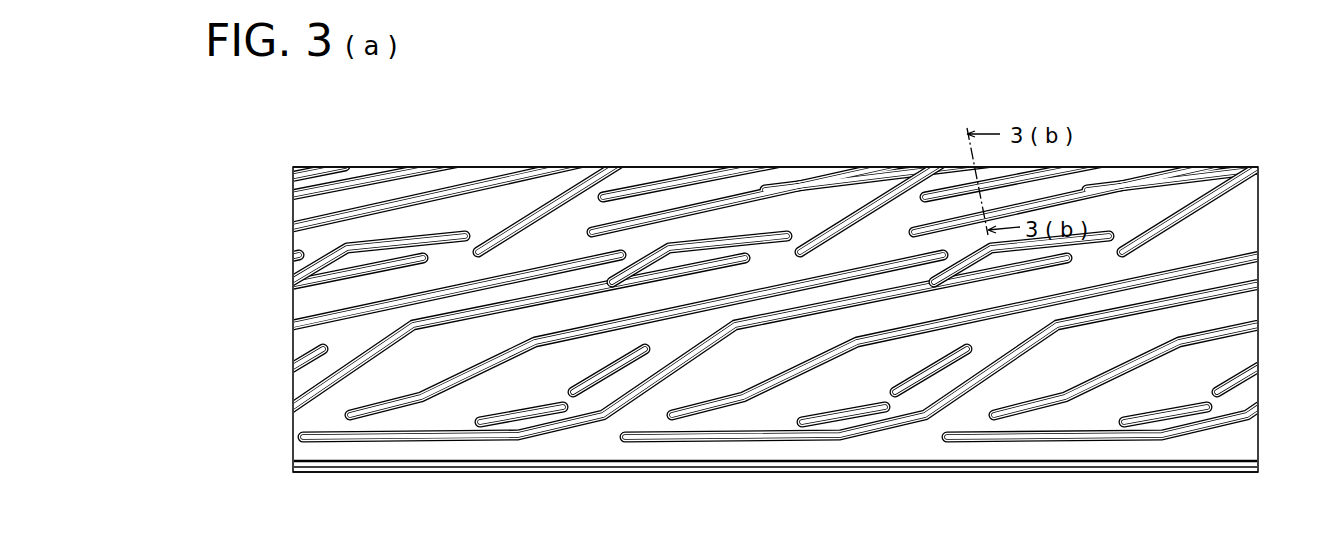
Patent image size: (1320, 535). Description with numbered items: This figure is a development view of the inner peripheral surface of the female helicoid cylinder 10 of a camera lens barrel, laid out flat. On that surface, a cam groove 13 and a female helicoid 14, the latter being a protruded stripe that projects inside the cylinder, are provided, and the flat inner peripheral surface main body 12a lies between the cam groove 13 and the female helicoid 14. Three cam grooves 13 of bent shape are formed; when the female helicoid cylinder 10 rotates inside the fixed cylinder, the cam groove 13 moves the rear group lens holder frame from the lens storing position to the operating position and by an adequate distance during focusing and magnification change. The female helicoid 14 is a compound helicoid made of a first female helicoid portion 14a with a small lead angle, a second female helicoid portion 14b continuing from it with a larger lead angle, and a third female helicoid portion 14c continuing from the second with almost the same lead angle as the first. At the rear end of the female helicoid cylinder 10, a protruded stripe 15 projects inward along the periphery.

The female helicoid cylinder 10 is at (685, 95).
The inner peripheral surface main body 12a is at (806, 172).
The cam groove 13 is at (358, 170).
The female helicoid 14 is at (426, 170).
The first female helicoid portion 14a is at (655, 318).
The second female helicoid portion 14b is at (590, 382).
The third female helicoid portion 14c is at (465, 408).
The protruded stripe 15 is at (720, 473).